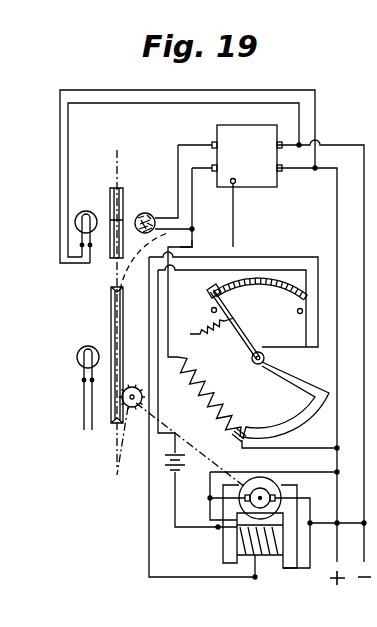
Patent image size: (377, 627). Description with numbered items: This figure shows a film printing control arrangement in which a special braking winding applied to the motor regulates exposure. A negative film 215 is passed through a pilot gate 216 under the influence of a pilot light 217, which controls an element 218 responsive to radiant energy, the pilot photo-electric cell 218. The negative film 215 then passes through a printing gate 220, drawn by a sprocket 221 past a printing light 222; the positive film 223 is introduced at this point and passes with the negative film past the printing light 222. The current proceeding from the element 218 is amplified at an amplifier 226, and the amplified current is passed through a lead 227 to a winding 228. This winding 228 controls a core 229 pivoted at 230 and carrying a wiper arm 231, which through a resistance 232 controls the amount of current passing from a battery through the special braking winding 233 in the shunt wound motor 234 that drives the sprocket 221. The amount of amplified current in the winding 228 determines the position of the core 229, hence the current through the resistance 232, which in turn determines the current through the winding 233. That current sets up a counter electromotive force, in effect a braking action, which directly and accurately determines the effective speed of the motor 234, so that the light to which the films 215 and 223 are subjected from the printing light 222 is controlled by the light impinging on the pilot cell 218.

The negative film 215 is at (118, 161).
The pilot gate 216 is at (110, 195).
The pilot light 217 is at (75, 220).
The pilot photo-electric cell 218 is at (146, 212).
The printing gate 220 is at (110, 320).
The sprocket 221 is at (127, 403).
The printing light 222 is at (77, 358).
The positive film 223 is at (204, 238).
The amplifier 226 is at (242, 133).
The lead 227 is at (238, 218).
The winding 228 is at (211, 399).
The core 229 is at (283, 432).
The pivot 230 is at (261, 352).
The wiper arm 231 is at (232, 313).
The resistance 232 is at (265, 283).
The special braking winding 233 is at (255, 560).
The shunt wound motor 234 is at (276, 490).